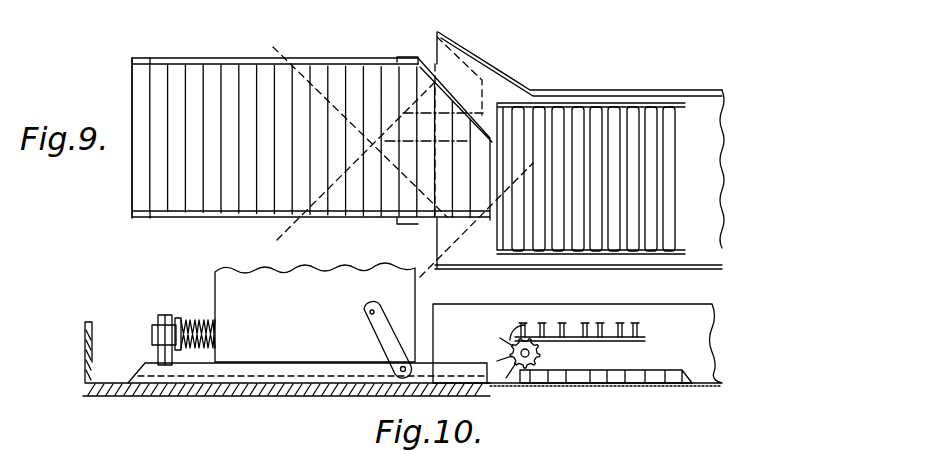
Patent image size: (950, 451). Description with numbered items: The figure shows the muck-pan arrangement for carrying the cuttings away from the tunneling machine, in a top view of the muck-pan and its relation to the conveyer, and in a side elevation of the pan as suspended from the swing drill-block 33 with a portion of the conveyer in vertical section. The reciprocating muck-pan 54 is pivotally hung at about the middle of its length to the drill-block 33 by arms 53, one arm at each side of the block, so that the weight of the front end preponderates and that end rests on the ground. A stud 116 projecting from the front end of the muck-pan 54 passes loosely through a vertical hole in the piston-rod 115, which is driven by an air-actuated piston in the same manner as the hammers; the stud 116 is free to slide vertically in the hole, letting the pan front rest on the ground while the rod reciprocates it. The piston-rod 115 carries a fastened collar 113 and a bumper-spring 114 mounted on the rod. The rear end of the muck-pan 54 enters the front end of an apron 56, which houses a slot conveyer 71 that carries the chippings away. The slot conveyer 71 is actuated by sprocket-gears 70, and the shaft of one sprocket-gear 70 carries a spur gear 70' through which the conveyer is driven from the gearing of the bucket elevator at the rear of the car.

In FIG. 10, the drill-block 33 is at (258, 348).
In FIG. 9, the arms 53 is at (417, 60).
In FIG. 10, the arms 53 is at (388, 350).
In FIG. 9, the muck-pan 54 is at (187, 213).
In FIG. 10, the muck-pan 54 is at (308, 377).
In FIG. 9, the apron 56 is at (567, 92).
In FIG. 10, the apron 56 is at (527, 357).
In FIG. 10, the sprocket-gears 70 is at (566, 368).
In FIG. 9, the spur gear 70' is at (382, 138).
In FIG. 9, the slot conveyer 71 is at (622, 128).
In FIG. 10, the slot conveyer 71 is at (612, 372).
In FIG. 10, the collar 113 is at (177, 318).
In FIG. 10, the bumper-spring 114 is at (208, 322).
In FIG. 10, the piston-rod 115 is at (153, 337).
In FIG. 10, the stud 116 is at (158, 317).